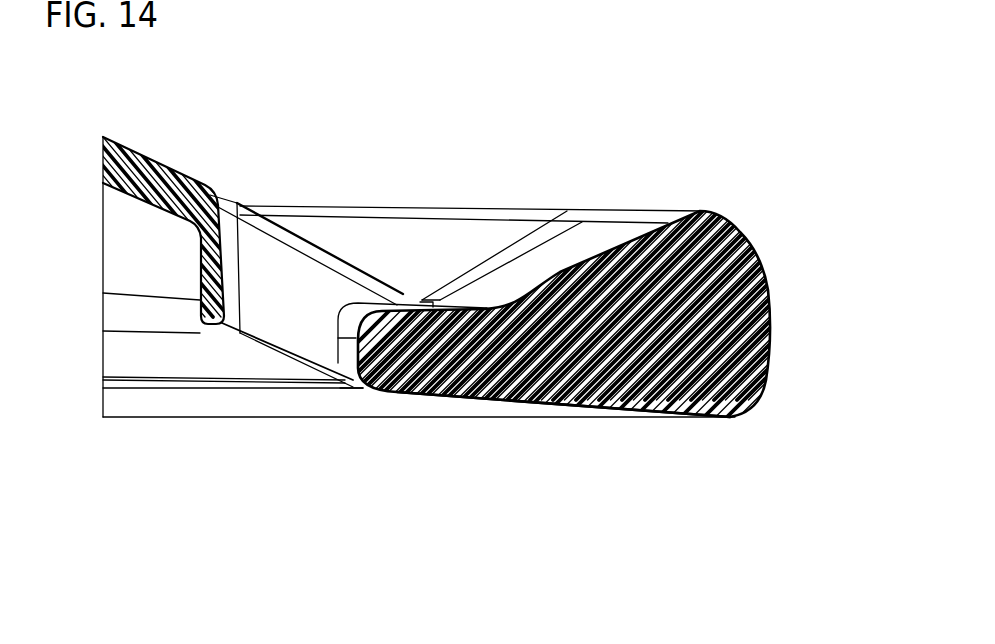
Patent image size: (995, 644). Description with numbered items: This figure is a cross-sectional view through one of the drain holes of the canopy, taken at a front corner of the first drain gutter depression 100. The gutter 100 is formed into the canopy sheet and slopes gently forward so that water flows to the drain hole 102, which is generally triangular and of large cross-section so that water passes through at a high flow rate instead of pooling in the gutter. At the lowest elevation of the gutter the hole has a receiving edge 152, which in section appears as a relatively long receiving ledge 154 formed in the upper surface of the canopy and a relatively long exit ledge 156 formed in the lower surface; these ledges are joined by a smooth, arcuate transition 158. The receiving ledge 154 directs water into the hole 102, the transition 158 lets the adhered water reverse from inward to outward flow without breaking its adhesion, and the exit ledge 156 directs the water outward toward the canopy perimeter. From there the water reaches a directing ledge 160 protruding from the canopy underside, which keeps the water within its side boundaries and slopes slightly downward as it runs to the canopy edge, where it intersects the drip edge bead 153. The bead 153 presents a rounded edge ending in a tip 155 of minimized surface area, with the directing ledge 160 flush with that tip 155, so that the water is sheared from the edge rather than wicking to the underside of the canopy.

The first drain gutter depression 100 is at (478, 268).
The drain hole 102 is at (287, 285).
The receiving edge 152 is at (410, 297).
The drip edge bead 153 is at (760, 410).
The receiving ledge 154 is at (400, 313).
The drip edge bead tip 155 is at (730, 418).
The exit ledge 156 is at (362, 363).
The arcuate transition 158 is at (353, 349).
The directing ledge 160 is at (567, 407).